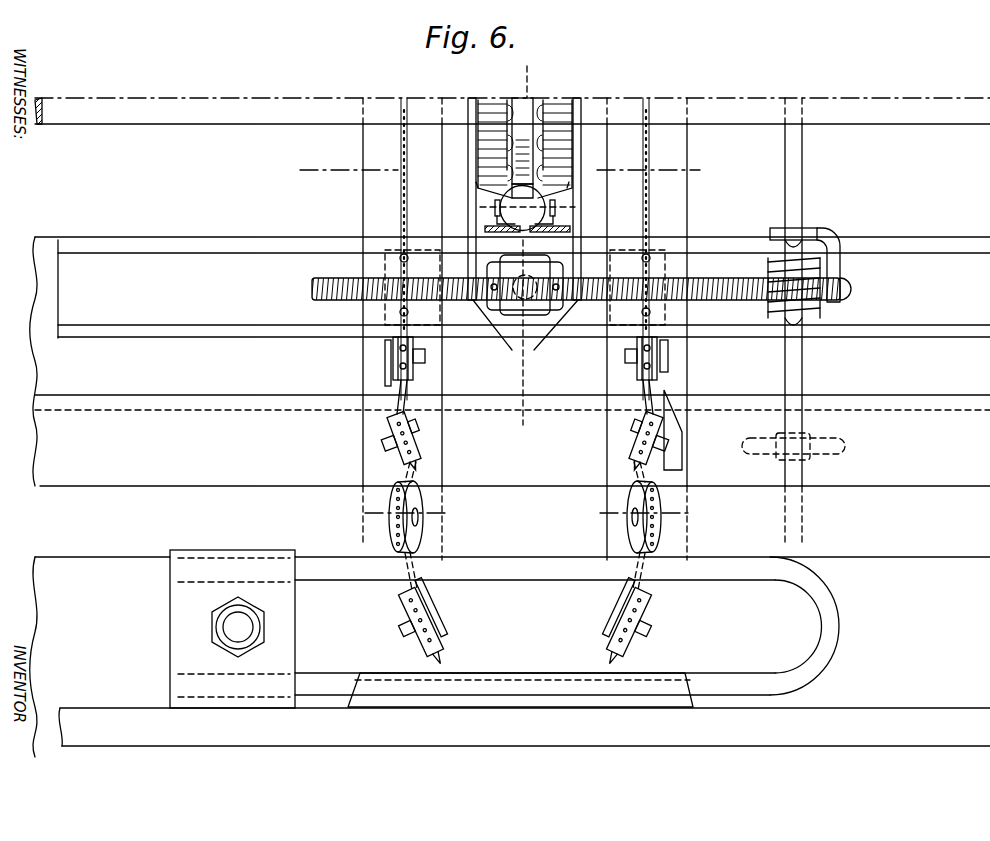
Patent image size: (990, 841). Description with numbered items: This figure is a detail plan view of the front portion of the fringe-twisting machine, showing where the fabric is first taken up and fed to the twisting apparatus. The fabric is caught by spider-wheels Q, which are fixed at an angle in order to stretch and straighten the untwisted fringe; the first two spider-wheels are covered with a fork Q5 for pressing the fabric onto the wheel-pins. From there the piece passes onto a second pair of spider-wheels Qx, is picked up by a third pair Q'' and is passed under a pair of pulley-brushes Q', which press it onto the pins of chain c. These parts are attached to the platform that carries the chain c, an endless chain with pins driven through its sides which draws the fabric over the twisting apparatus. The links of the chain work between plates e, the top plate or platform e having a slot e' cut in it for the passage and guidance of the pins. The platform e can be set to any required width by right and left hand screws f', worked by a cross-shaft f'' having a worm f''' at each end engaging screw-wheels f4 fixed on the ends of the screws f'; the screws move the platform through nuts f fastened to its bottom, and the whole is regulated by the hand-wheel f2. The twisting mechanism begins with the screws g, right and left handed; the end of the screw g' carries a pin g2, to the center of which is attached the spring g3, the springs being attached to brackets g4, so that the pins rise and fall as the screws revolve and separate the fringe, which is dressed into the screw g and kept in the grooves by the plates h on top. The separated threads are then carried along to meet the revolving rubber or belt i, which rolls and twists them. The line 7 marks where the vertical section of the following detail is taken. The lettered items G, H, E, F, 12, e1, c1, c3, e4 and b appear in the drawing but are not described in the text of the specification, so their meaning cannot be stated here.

The upper shaft G is at (512, 101).
The upper shaft section H is at (770, 84).
The reference line E is at (338, 171).
The reference line F is at (764, 171).
The chain c is at (405, 193).
The slot e' is at (510, 249).
The screw g is at (537, 130).
The screw end g' is at (522, 162).
The revolving rubber or belt i is at (478, 182).
The plate or platform e is at (510, 347).
The nut f is at (525, 287).
The right and left hand screw f' is at (576, 277).
The cross-shaft f'' is at (805, 321).
The screw ends 12 is at (311, 290).
The pin g2 is at (497, 216).
The spring g3 is at (528, 232).
The bracket g4 is at (556, 228).
The plate h is at (525, 310).
The lower nuts e1 is at (536, 312).
The pulley-brush Q' is at (525, 360).
The clamp bodies c1 is at (525, 404).
The clamp plates c3 is at (376, 405).
The spider-wheel Q'' is at (525, 445).
The section line 7 is at (521, 255).
The spider-wheel Q is at (523, 564).
The spider-wheel Qx is at (446, 521).
The side plate e4 is at (671, 405).
The hand-wheel f2 is at (793, 439).
The screw-wheel f4 is at (783, 322).
The worm f''' is at (811, 312).
The fork Q5 is at (567, 626).
The lower beam b is at (510, 639).